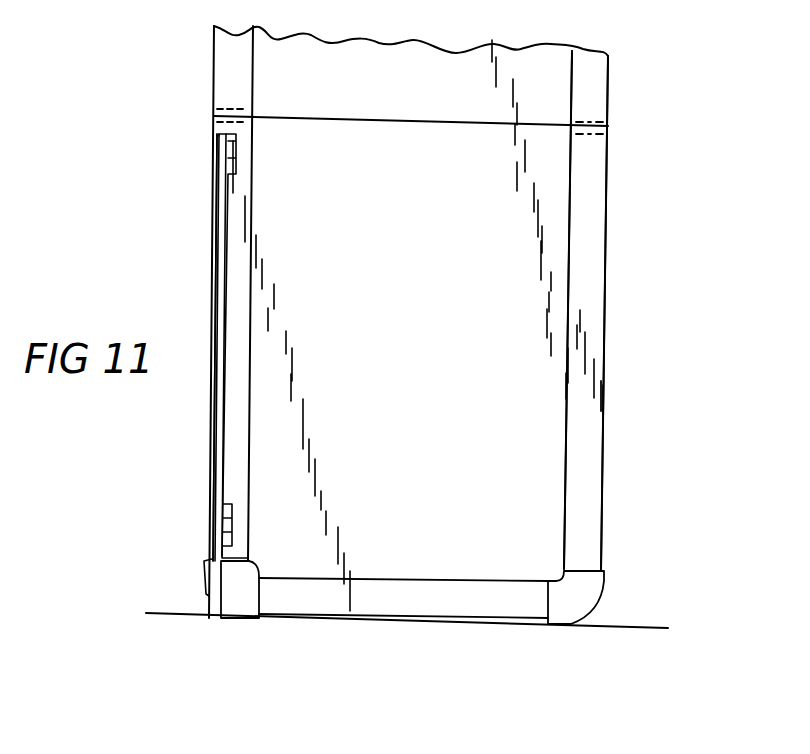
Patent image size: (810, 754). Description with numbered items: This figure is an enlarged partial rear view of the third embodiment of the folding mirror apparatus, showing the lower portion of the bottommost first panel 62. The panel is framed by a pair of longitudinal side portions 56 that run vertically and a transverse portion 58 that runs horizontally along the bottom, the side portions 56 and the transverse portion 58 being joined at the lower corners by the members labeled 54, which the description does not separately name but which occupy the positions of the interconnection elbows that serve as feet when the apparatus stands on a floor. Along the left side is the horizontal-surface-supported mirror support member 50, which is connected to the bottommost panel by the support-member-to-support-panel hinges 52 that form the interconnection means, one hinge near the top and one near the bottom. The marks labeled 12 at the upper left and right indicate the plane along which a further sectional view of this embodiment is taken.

The section line 12- 12 is at (106, 165).
The horizontal-surface-supported mirror support member 50 is at (222, 444).
The support-member-to-support-panel hinges 52 is at (235, 153).
The corner block 54 is at (238, 597).
The longitudinal side portions 56 is at (244, 196).
The transverse portion 58 is at (470, 598).
The bottommost first panel 62 is at (603, 395).